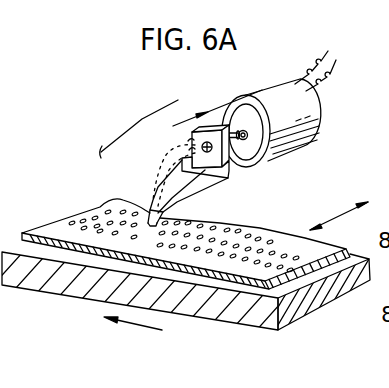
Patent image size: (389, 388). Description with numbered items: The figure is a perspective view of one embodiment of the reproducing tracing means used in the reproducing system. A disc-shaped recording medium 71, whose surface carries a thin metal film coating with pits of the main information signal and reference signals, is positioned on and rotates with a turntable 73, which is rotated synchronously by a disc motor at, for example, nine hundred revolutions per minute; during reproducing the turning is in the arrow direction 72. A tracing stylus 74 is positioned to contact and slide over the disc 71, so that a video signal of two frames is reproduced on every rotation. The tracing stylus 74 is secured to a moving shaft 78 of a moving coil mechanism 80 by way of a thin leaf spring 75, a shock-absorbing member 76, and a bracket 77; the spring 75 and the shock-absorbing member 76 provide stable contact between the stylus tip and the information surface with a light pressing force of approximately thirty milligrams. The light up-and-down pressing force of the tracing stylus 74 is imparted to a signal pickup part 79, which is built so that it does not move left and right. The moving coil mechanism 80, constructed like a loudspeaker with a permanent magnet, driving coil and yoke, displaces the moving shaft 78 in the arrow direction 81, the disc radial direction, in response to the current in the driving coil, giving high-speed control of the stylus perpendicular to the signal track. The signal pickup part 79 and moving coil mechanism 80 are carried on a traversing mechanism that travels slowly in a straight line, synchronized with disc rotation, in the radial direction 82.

The disc-shaped recording medium 71 is at (60, 214).
The arrow direction 72 is at (137, 332).
The turntable 73 is at (328, 297).
The tracing stylus 74 is at (160, 217).
The thin leaf spring 75 is at (153, 190).
The shock-absorbing member 76 is at (220, 176).
The bracket 77 is at (187, 133).
The moving shaft 78 is at (266, 158).
The signal pickup part 79 is at (144, 120).
The moving coil mechanism 80 is at (282, 78).
The arrow direction 81 is at (192, 117).
The radial direction 82 is at (340, 209).